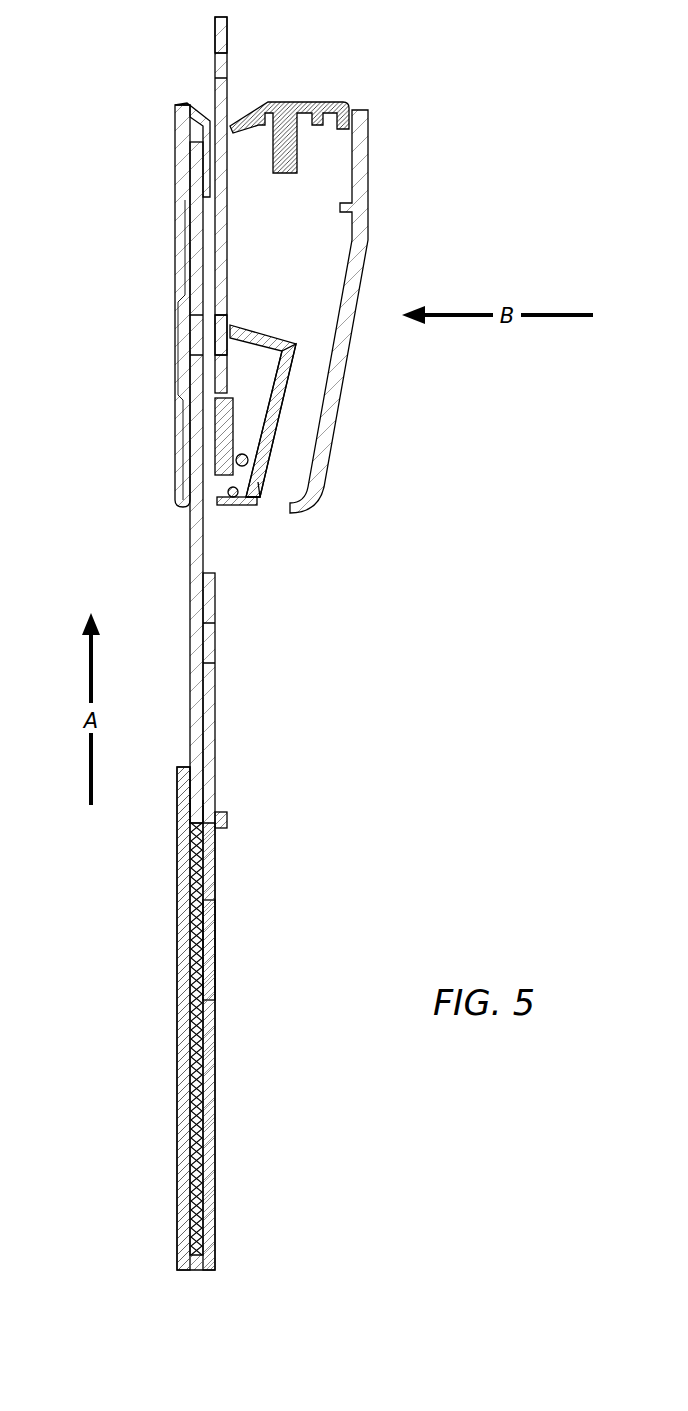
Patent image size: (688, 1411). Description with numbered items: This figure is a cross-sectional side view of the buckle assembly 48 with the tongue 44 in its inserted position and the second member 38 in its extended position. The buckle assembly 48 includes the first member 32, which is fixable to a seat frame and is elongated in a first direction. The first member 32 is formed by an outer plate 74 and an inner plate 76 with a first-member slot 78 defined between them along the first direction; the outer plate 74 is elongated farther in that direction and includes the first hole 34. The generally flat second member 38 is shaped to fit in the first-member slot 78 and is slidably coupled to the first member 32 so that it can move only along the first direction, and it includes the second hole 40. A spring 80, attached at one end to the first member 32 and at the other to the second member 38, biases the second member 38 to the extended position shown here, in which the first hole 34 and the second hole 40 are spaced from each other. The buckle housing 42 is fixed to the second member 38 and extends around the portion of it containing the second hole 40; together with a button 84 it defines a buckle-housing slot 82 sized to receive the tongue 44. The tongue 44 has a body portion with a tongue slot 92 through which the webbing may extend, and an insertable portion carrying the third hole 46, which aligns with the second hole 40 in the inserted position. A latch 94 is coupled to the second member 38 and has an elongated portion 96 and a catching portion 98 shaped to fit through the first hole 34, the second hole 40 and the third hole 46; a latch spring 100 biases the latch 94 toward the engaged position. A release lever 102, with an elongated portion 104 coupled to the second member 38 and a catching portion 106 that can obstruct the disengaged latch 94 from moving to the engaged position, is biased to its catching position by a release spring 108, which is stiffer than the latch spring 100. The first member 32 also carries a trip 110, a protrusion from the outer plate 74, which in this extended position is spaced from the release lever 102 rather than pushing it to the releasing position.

The first member 32 is at (215, 1140).
The first hole 34 is at (215, 665).
The second member 38 is at (190, 548).
The second hole 40 is at (190, 330).
The buckle housing 42 is at (176, 195).
The tongue 44 is at (228, 92).
The third hole 46 is at (228, 315).
The buckle assembly 48 is at (121, 80).
The outer plate 74 is at (215, 958).
The inner plate 76 is at (177, 930).
The first-member slot 78 is at (196, 793).
The spring 80 is at (195, 1030).
The buckle-housing slot 82 is at (208, 120).
The button 84 is at (325, 104).
The tongue slot 92 is at (228, 55).
The latch 94 is at (292, 380).
The elongated portion 96 is at (283, 410).
The catching portion 98 is at (255, 332).
The latch spring 100 is at (250, 442).
The release lever 102 is at (252, 500).
The elongated portion 104 is at (232, 506).
The catching portion 106 is at (258, 498).
The release spring 108 is at (230, 492).
The trip 110 is at (222, 830).